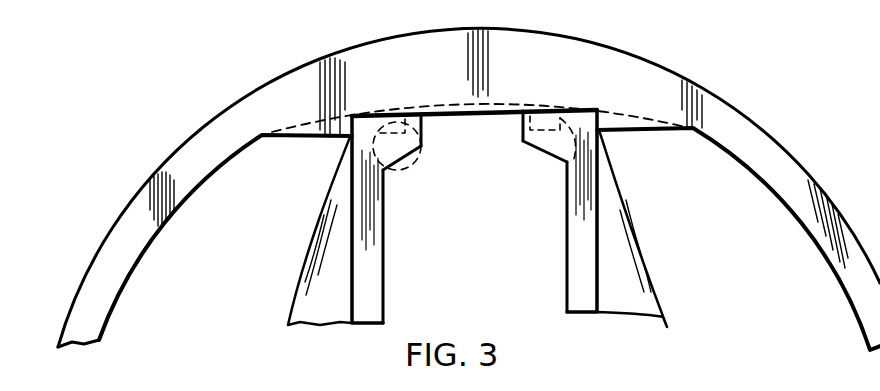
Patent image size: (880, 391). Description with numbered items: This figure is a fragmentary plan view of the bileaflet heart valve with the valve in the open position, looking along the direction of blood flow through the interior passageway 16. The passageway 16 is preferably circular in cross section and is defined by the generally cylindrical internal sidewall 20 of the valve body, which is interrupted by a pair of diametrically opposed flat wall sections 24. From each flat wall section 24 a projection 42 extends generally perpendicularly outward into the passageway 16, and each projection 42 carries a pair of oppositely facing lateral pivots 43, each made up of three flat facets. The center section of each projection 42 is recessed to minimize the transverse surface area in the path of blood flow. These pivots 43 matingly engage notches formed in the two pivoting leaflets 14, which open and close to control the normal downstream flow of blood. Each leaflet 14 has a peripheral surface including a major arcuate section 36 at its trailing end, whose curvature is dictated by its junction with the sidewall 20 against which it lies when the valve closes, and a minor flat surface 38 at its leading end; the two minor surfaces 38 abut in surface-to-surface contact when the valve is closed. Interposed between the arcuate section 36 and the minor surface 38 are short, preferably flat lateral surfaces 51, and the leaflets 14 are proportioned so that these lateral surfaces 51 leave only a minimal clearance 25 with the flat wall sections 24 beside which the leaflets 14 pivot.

The leaflet 14 is at (637, 260).
The interior passageway 16 is at (482, 255).
The sidewall 20 is at (157, 223).
The flat wall section 24 is at (500, 112).
The minimal clearance 25 is at (425, 118).
The major arcuate section 36 is at (320, 0).
The minor flat surface 38 is at (580, 257).
The projection 42 is at (428, 163).
The lateral pivot 43 is at (388, 168).
The lateral surface 51 is at (583, 108).